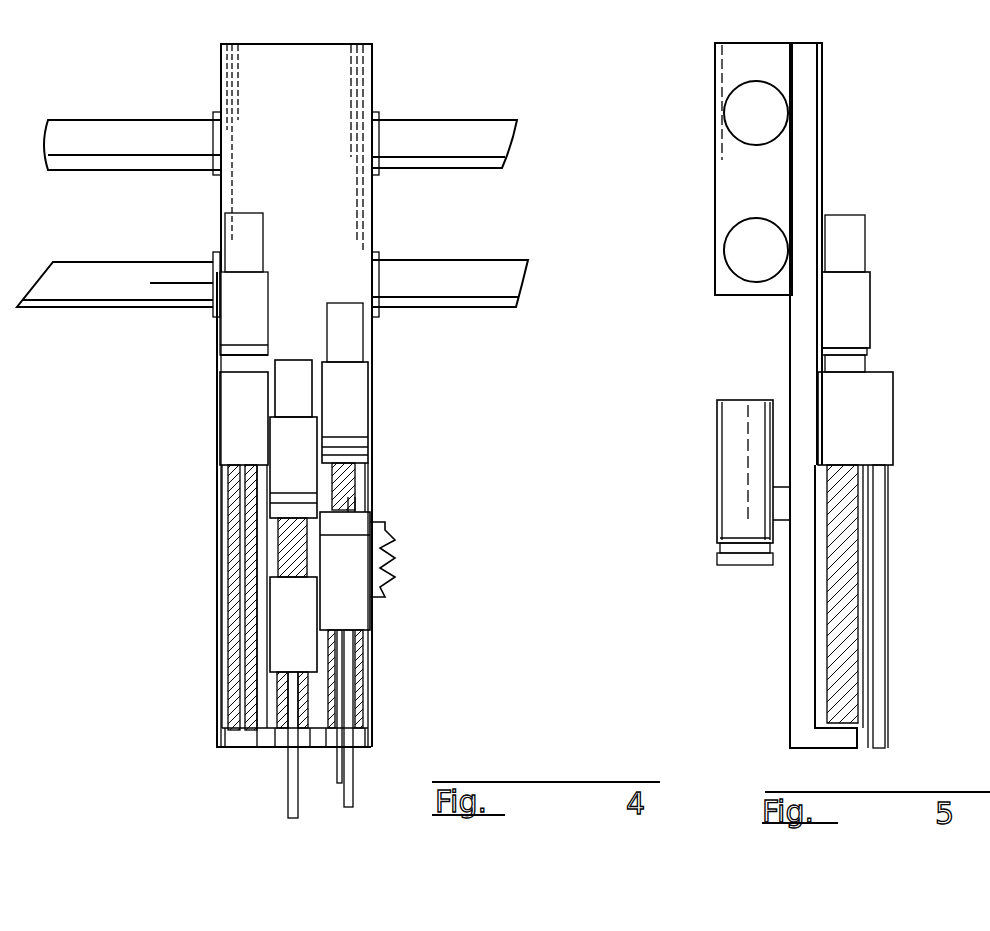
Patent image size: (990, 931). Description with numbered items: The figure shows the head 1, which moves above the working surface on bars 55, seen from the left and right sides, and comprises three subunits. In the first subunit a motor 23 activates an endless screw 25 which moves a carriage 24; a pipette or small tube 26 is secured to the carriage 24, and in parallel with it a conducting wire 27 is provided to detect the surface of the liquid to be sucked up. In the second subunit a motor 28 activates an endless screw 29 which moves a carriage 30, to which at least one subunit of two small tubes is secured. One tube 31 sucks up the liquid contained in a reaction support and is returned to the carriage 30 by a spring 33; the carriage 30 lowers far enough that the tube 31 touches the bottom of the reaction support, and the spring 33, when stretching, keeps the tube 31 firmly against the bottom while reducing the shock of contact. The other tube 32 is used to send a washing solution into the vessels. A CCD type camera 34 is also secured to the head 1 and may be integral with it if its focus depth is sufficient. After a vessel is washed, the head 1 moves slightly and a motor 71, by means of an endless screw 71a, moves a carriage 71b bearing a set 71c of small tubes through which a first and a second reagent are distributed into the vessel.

In FIG. 4, the head 1 is at (205, 707).
In FIG. 5, the head 1 is at (776, 609).
In FIG. 4, the motor 23 is at (233, 325).
In FIG. 5, the motor 23 is at (857, 307).
In FIG. 4, the carriage 24 is at (233, 437).
In FIG. 5, the carriage 24 is at (878, 433).
In FIG. 4, the endless screw 25 is at (232, 500).
In FIG. 5, the endless screw 25 is at (848, 548).
In FIG. 4, the pipette or small tube 26 is at (235, 600).
In FIG. 5, the pipette or small tube 26 is at (887, 590).
In FIG. 5, the conducting wire 27 is at (868, 700).
In FIG. 4, the motor 28 is at (355, 405).
In FIG. 4, the endless screw 29 is at (340, 483).
In FIG. 4, the carriage 30 is at (347, 615).
In FIG. 4, the tube 31 is at (353, 768).
In FIG. 4, the tube 32 is at (337, 782).
In FIG. 4, the spring 33 is at (395, 555).
In FIG. 5, the CCD type camera 34 is at (740, 437).
In FIG. 4, the bars 55 is at (445, 135).
In FIG. 4, the motor 71 is at (292, 380).
In FIG. 4, the endless screw 71a is at (288, 548).
In FIG. 4, the carriage 71b is at (285, 632).
In FIG. 4, the set of small tubes 71c is at (286, 772).